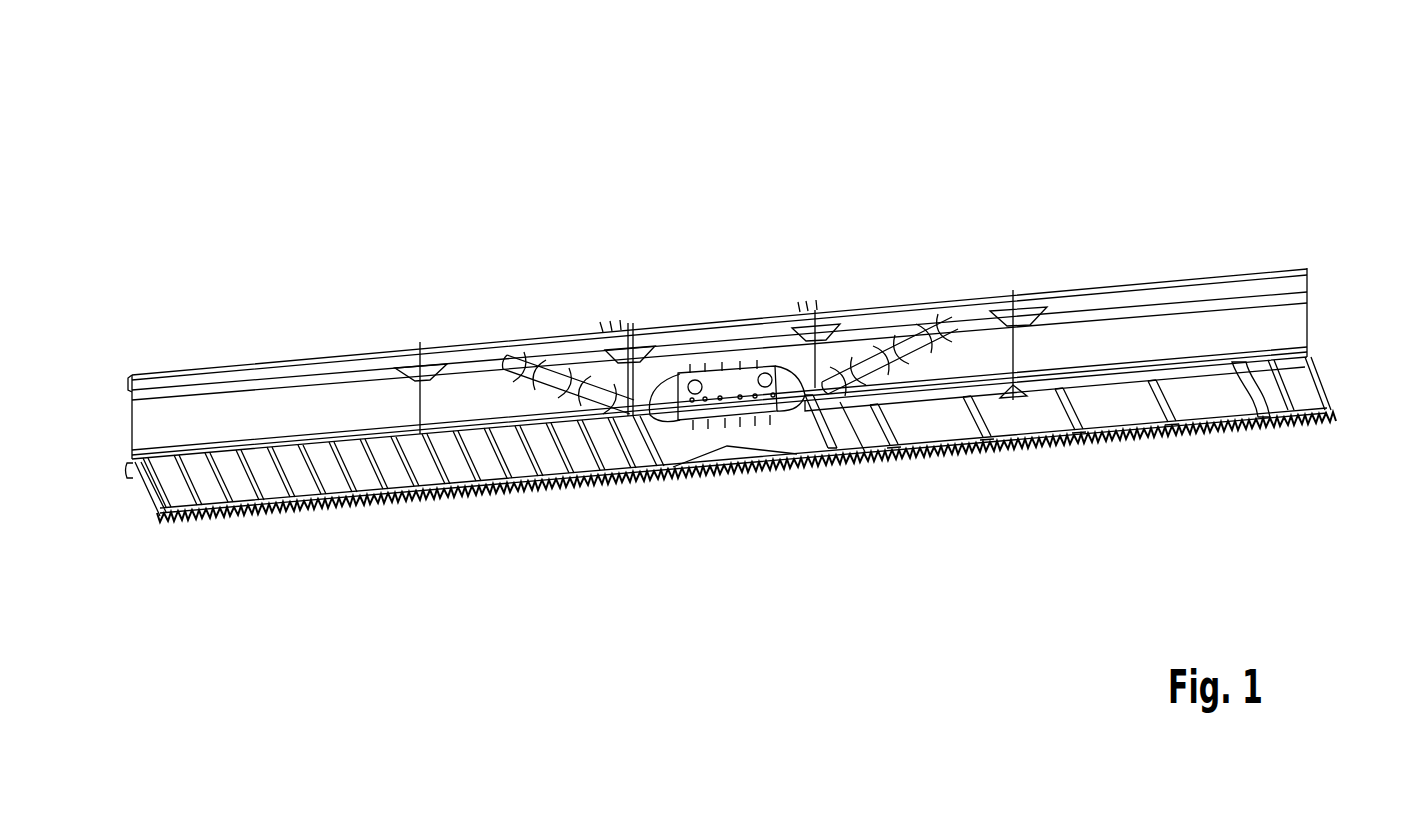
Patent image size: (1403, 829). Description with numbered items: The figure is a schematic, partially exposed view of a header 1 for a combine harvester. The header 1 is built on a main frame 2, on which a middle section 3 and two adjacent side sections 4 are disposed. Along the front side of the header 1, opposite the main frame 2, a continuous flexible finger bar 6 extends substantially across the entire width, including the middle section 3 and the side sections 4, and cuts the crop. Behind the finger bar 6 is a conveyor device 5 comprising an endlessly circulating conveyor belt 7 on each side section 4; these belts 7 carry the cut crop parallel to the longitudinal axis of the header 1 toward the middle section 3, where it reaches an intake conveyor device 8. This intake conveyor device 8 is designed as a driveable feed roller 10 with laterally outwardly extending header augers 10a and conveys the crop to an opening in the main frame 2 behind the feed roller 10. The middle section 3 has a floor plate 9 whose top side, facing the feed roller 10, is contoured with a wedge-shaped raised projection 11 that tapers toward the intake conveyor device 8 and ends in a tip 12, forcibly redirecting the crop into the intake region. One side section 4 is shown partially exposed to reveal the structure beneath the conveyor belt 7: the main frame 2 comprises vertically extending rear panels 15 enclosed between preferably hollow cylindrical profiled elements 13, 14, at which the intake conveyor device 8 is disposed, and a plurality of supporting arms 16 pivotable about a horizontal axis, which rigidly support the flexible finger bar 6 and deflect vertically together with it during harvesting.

The header 1 is at (1033, 180).
The main frame 2 is at (1322, 290).
The middle section 3 is at (730, 310).
The side section 4 is at (452, 325).
The conveyor device 5 is at (148, 520).
The finger bar 6 is at (283, 522).
The conveyor belt 7 is at (390, 472).
The intake conveyor device 8 is at (672, 445).
The floor plate 9 is at (812, 445).
The feed roller 10 is at (808, 437).
The header auger 10a is at (517, 358).
The projection 11 is at (738, 443).
The tip 12 is at (728, 437).
The profiled element 13 is at (133, 480).
The profiled element 14 is at (140, 378).
The rear panel 15 is at (148, 428).
The supporting arm 16 is at (977, 440).